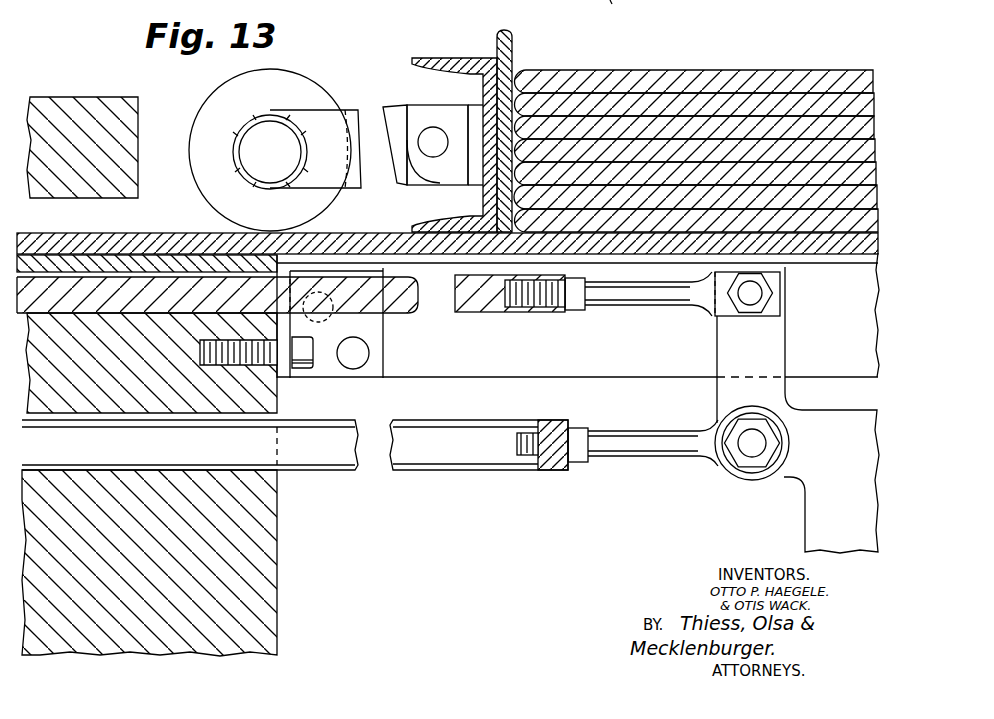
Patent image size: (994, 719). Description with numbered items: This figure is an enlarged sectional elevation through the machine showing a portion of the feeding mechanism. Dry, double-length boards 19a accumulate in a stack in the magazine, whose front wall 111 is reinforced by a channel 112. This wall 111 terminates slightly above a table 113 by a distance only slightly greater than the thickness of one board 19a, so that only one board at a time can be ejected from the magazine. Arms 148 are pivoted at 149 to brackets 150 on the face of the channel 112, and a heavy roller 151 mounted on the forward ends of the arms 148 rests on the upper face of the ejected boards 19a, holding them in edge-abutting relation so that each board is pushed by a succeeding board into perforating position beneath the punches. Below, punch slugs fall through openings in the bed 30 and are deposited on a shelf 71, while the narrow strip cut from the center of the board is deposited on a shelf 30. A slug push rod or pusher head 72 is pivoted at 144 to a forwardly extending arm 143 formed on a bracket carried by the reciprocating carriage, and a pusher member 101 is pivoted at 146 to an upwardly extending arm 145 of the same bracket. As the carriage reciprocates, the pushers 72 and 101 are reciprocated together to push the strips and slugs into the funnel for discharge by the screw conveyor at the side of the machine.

The double-length board 19a is at (722, 70).
The bed 30 is at (243, 566).
The shelf 71 is at (609, 12).
The pusher head 72 is at (418, 470).
The pusher member 101 is at (402, 306).
The front wall 111 is at (506, 56).
The channel 112 is at (477, 60).
The table 113 is at (594, 357).
The forwardly extending arm 143 is at (826, 493).
The pivot 144 is at (748, 445).
The upwardly extending arm 145 is at (740, 357).
The pivot 146 is at (752, 293).
The arms 148 is at (330, 128).
The pivot 149 is at (430, 138).
The brackets 150 is at (455, 108).
The heavy roller 151 is at (215, 112).